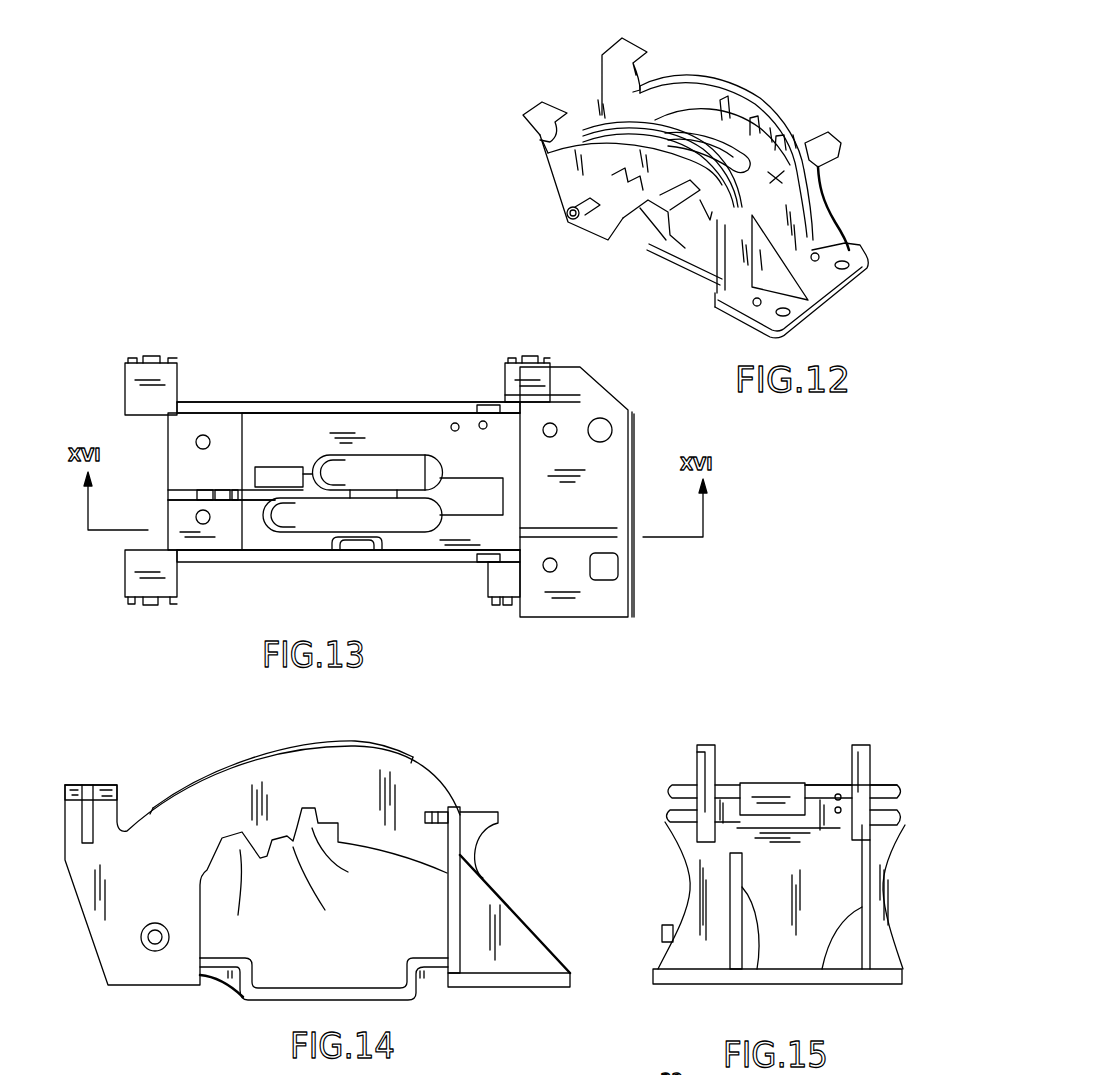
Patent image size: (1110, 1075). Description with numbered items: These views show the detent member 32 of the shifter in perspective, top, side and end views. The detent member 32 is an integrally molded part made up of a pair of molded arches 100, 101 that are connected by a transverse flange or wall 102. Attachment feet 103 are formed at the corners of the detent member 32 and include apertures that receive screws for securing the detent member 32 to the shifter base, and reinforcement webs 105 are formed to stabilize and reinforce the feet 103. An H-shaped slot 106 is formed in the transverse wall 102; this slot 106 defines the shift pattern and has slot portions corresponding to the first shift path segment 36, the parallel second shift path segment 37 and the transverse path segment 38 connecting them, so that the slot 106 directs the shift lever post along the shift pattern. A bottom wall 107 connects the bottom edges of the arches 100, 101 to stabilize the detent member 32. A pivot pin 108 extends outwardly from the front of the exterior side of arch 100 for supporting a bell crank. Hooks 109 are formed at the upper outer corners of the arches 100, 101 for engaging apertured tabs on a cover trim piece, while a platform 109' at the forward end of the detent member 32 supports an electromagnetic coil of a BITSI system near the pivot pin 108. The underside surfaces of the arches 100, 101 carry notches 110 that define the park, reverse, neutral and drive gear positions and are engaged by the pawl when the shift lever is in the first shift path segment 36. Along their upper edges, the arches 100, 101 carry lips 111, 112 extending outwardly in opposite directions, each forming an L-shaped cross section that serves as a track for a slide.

In FIG. 12, the detent member 32 is at (522, 180).
In FIG. 13, the detent member 32 is at (205, 345).
In FIG. 14, the detent member 32 is at (455, 758).
In FIG. 15, the detent member 32 is at (835, 722).
In FIG. 13, the first shift path segment 36 is at (330, 525).
In FIG. 13, the second shift path segment 37 is at (358, 482).
In FIG. 13, the transverse path segment 38 is at (382, 506).
In FIG. 12, the arch 100 is at (647, 148).
In FIG. 13, the arch 100 is at (280, 563).
In FIG. 14, the arch 100 is at (222, 792).
In FIG. 15, the arch 100 is at (697, 780).
In FIG. 12, the arch 101 is at (753, 97).
In FIG. 13, the arch 101 is at (352, 402).
In FIG. 14, the arch 101 is at (505, 1074).
In FIG. 15, the arch 101 is at (870, 782).
In FIG. 12, the transverse wall 102 is at (762, 186).
In FIG. 13, the transverse wall 102 is at (288, 452).
In FIG. 15, the transverse wall 102 is at (804, 793).
In FIG. 12, the attachment feet 103 is at (863, 257).
In FIG. 13, the attachment feet 103 is at (605, 402).
In FIG. 14, the attachment feet 103 is at (508, 985).
In FIG. 15, the attachment feet 103 is at (685, 975).
In FIG. 12, the reinforcement webs 105 is at (822, 198).
In FIG. 14, the reinforcement webs 105 is at (508, 903).
In FIG. 15, the reinforcement webs 105 is at (752, 971).
In FIG. 13, the H-shaped slot 106 is at (385, 462).
In FIG. 12, the bottom wall 107 is at (660, 243).
In FIG. 14, the bottom wall 107 is at (248, 1003).
In FIG. 12, the pivot pin 108 is at (570, 219).
In FIG. 13, the pivot pin 108 is at (235, 495).
In FIG. 14, the pivot pin 108 is at (150, 948).
In FIG. 15, the pivot pin 108 is at (664, 926).
In FIG. 12, the hooks 109 is at (663, 163).
In FIG. 13, the hooks 109 is at (307, 467).
In FIG. 14, the hooks 109 is at (256, 773).
In FIG. 13, the platform 109' is at (163, 421).
In FIG. 12, the notches 110 is at (668, 213).
In FIG. 14, the notches 110 is at (268, 890).
In FIG. 13, the lip 111 is at (326, 563).
In FIG. 14, the lip 111 is at (300, 748).
In FIG. 15, the lip 111 is at (697, 752).
In FIG. 13, the lip 112 is at (313, 402).
In FIG. 15, the lip 112 is at (865, 752).